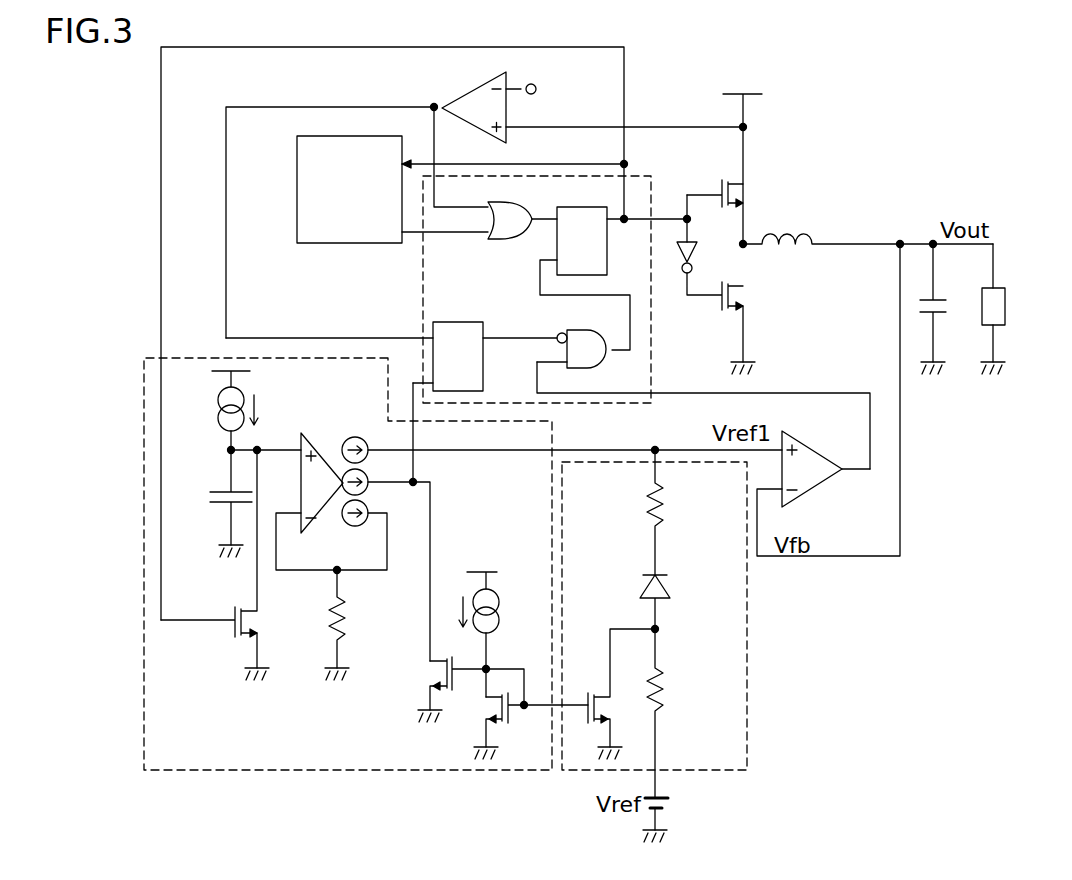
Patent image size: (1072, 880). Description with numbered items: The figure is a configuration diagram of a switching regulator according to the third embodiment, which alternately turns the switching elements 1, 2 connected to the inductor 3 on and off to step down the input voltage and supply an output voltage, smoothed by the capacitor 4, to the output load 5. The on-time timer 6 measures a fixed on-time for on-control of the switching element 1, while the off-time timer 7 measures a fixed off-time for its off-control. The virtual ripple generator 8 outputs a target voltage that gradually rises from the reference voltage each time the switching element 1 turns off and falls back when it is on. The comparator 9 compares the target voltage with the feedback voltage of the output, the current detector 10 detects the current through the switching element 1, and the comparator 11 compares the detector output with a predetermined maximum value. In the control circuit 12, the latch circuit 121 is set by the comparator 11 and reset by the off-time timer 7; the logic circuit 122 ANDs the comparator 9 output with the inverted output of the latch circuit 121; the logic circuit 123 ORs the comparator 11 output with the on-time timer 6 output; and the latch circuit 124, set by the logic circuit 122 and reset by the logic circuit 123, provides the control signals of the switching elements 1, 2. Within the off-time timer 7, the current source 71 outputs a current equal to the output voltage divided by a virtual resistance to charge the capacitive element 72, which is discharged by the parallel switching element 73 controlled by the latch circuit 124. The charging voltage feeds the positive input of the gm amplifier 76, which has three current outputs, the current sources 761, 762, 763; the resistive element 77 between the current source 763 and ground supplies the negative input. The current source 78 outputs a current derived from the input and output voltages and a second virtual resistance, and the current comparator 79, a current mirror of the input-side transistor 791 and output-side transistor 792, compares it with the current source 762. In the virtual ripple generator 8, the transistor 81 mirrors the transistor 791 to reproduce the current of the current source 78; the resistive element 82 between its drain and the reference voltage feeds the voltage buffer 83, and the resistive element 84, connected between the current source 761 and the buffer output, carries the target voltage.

The switching element 1 is at (718, 185).
The switching element 2 is at (719, 304).
The inductor 3 is at (790, 234).
The capacitor 4 is at (937, 297).
The output load 5 is at (1006, 297).
The on-time timer 6 is at (297, 162).
The off-time timer 7 is at (554, 418).
The virtual ripple generator 8 is at (749, 618).
The comparator 9 is at (818, 490).
The current detector 10 is at (748, 122).
The comparator 11 is at (516, 137).
The control circuit 12 is at (652, 343).
The current source 71 is at (243, 385).
The capacitive element 72 is at (224, 486).
The switching element 73 is at (242, 608).
The gm amplifier 76 is at (318, 433).
The current source 761 is at (357, 437).
The current source 762 is at (369, 490).
The current source 763 is at (352, 528).
The resistive element 77 is at (334, 622).
The current source 78 is at (490, 566).
The current comparator 79 is at (406, 732).
The transistor 791 is at (500, 727).
The transistor 792 is at (456, 685).
The transistor 81 is at (598, 688).
The resistive element 82 is at (666, 682).
The voltage buffer 83 is at (666, 582).
The resistive element 84 is at (644, 503).
The latch circuit 121 is at (450, 323).
The logic circuit 122 is at (566, 331).
The logic circuit 123 is at (504, 204).
The latch circuit 124 is at (557, 243).